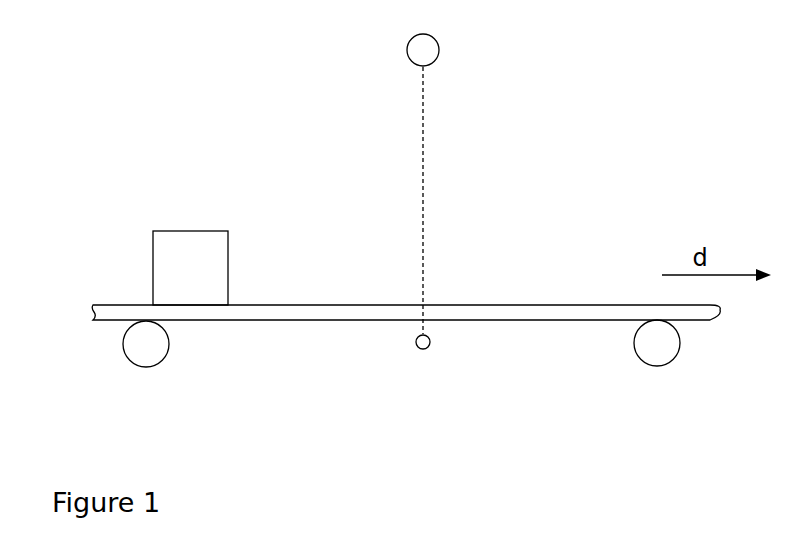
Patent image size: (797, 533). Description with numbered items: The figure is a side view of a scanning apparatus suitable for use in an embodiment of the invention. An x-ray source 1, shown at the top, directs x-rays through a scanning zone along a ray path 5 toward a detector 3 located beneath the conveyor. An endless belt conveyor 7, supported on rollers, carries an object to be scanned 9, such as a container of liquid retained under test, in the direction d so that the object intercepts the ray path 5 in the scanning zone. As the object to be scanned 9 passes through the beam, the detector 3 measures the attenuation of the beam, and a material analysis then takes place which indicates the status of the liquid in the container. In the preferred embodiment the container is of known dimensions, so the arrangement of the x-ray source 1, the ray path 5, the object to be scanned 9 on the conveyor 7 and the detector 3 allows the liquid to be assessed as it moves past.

The x-ray source 1 is at (408, 50).
The ray path 5 is at (425, 125).
The object to be scanned 9 is at (153, 231).
The endless belt conveyor 7 is at (119, 305).
The detector 3 is at (425, 370).